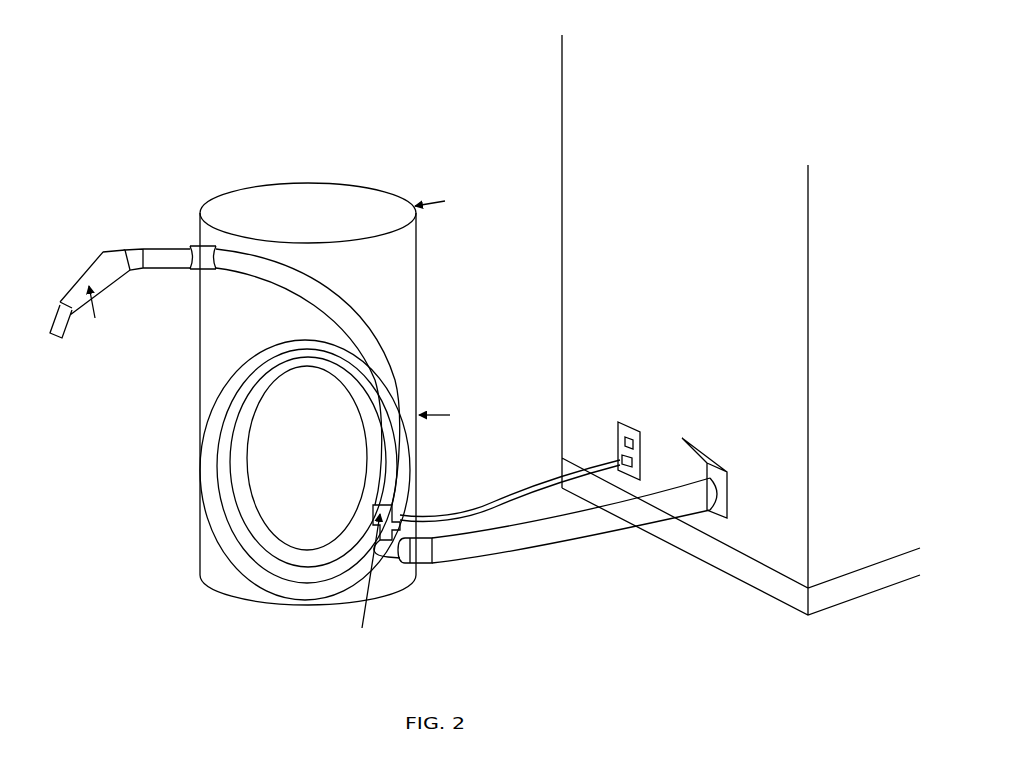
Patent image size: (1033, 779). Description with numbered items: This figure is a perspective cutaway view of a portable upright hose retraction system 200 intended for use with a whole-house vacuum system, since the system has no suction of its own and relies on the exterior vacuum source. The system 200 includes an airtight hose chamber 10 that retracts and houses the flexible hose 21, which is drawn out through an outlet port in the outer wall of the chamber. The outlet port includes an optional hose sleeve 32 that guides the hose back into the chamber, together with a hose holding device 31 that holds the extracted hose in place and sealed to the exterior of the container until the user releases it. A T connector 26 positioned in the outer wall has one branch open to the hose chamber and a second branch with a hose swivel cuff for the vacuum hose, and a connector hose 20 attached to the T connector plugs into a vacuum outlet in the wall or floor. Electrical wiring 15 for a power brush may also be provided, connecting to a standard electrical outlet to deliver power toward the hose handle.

The hose retraction system 200 is at (375, 387).
The hose chamber 10 is at (403, 382).
The flexible hose 21 is at (377, 338).
The hose sleeve 32 is at (197, 245).
The hose holding device 31 is at (189, 249).
The T connector 26 is at (389, 547).
The hose for connecting to the central vacuum system 20 is at (488, 549).
The 120 volt cord for power brush 15 is at (491, 502).